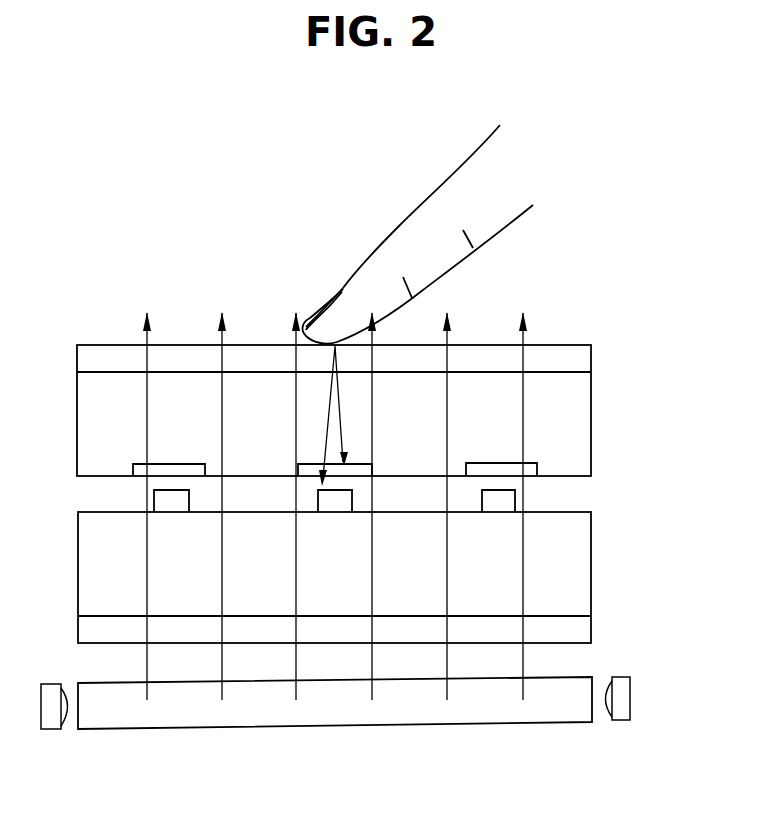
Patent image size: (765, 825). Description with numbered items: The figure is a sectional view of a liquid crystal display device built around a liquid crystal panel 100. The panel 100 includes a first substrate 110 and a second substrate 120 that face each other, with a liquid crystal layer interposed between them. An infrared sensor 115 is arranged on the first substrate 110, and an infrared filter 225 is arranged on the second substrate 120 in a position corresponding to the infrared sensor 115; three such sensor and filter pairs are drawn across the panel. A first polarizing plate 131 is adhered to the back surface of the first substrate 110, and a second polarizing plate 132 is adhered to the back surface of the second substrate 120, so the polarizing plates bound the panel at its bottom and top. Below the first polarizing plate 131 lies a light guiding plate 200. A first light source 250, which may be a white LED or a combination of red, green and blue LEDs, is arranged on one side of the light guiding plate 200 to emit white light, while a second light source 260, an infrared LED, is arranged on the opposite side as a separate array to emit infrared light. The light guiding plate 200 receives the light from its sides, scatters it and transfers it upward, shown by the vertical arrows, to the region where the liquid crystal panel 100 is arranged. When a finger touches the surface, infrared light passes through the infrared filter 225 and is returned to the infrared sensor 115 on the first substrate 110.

The liquid crystal panel 100 is at (668, 343).
The first substrate 110 is at (588, 553).
The infrared sensor 115 is at (175, 502).
The second substrate 120 is at (588, 412).
The first polarizing plate 131 is at (588, 622).
The second polarizing plate 132 is at (588, 352).
The light guiding plate 200 is at (338, 718).
The infrared filter 225 is at (187, 466).
The first light source 250 is at (52, 729).
The second light source 260 is at (623, 720).